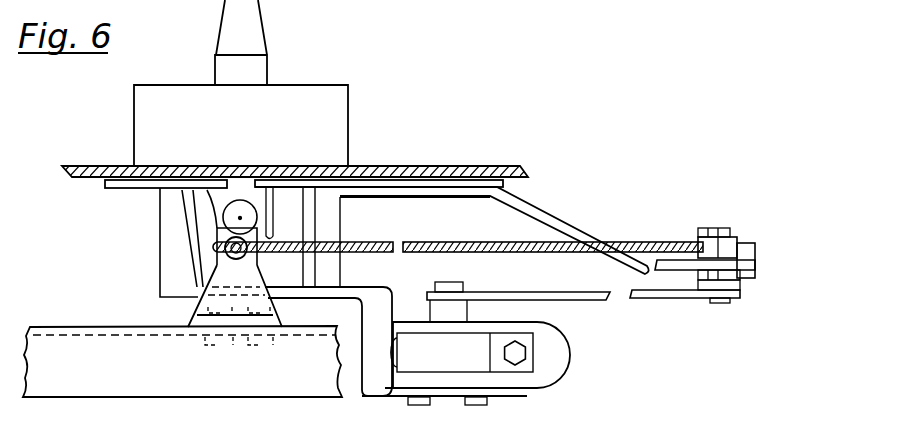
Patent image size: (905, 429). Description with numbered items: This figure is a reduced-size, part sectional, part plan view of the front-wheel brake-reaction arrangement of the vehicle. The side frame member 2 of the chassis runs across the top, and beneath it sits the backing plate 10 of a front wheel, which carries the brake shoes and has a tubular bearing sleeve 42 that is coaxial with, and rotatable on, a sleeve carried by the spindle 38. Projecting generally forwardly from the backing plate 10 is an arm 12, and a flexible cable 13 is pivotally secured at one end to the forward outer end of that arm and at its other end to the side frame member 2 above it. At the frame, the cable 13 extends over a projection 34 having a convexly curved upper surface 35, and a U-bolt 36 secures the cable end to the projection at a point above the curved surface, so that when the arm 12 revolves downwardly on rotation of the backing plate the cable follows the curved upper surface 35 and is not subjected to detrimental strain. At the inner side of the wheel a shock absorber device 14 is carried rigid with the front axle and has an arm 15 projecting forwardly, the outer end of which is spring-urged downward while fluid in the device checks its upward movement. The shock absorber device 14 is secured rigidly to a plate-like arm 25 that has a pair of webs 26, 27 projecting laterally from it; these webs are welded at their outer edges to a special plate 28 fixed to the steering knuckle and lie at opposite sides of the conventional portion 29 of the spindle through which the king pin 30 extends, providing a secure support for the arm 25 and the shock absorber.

The side frame member 2 is at (178, 390).
The backing plate 10 is at (427, 170).
The arm 12 is at (548, 221).
The flexible cable 13 is at (641, 239).
The shock absorber device 14 is at (560, 357).
The arm 15 is at (662, 294).
The plate-like arm 25 is at (510, 393).
The web 26 is at (190, 237).
The web 27 is at (308, 228).
The special plate 28 is at (145, 186).
The conventional portion of the spindle 29 is at (265, 218).
The king pin 30 is at (240, 218).
The projection 34 is at (227, 277).
The convexly curved upper surface 35 is at (250, 258).
The U-bolt 36 is at (262, 239).
The spindle 38 is at (262, 68).
The tubular bearing sleeve 42 is at (342, 110).